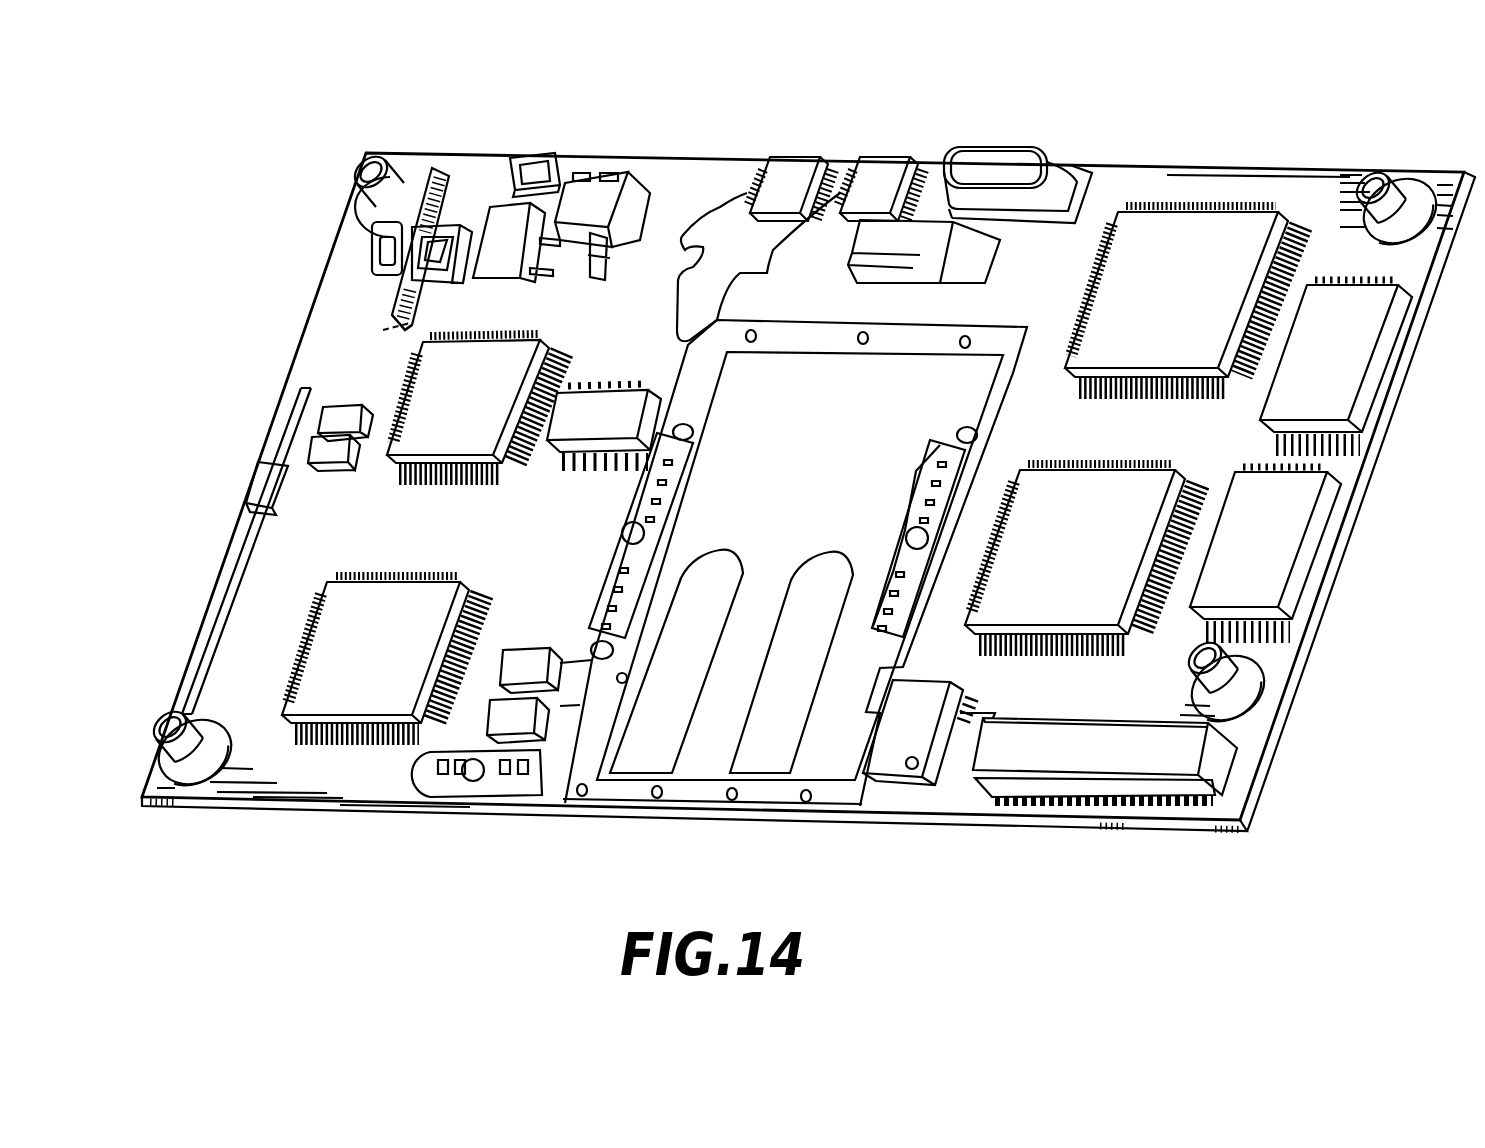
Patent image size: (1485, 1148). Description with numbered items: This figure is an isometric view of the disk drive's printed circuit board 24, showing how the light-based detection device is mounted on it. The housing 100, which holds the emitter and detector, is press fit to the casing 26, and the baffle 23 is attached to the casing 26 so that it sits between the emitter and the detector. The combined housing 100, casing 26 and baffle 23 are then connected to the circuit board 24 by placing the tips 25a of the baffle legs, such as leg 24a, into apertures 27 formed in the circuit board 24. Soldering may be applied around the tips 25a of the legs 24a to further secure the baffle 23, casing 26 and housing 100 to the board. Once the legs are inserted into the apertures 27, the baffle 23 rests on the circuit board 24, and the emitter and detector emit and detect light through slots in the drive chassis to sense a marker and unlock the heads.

The printed circuit board 24 is at (1270, 187).
The baffle 23 is at (395, 288).
The leg 24a is at (393, 316).
The tip 25a is at (410, 323).
The casing 26 is at (562, 243).
The aperture 27 is at (452, 221).
The housing 100 is at (433, 227).